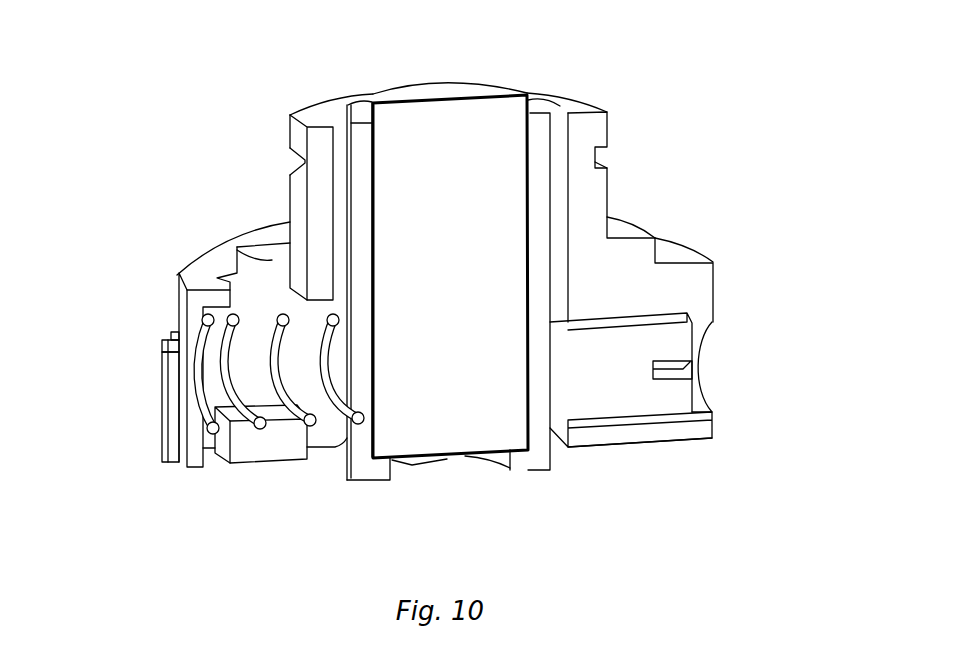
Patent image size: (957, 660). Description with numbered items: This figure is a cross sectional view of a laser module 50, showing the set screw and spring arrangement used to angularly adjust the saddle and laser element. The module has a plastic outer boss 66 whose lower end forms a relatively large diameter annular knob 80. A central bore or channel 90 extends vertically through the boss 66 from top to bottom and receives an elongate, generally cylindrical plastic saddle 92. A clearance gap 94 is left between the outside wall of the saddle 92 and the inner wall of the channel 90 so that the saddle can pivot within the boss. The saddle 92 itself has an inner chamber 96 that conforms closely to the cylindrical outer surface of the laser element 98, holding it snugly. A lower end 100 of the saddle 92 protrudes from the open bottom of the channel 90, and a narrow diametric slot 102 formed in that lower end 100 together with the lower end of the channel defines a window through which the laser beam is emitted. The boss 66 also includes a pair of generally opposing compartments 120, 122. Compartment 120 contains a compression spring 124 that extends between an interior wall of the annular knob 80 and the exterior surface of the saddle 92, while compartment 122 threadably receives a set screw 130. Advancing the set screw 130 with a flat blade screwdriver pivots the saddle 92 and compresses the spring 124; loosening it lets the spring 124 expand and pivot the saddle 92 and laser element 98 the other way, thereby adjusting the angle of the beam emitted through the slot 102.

The laser module 50 is at (272, 86).
The boss 66 is at (177, 273).
The annular knob 80 is at (192, 470).
The central bore or channel 90 is at (342, 122).
The saddle 92 is at (530, 472).
The clearance gap 94 is at (558, 215).
The inner chamber 96 is at (527, 209).
The laser element 98 is at (472, 82).
The lower end 100 is at (367, 480).
The diametric slot 102 is at (437, 460).
The compartment 120 is at (237, 248).
The compartment 122 is at (692, 365).
The compression spring 124 is at (262, 435).
The set screw 130 is at (673, 403).